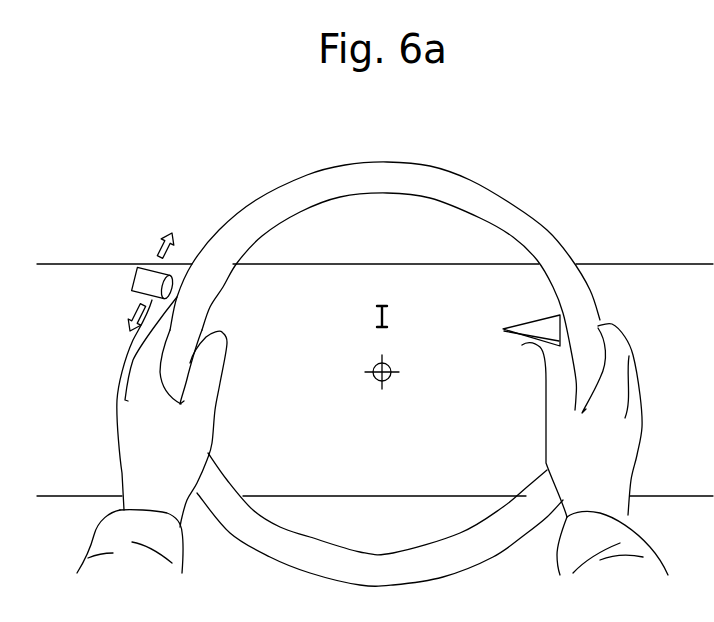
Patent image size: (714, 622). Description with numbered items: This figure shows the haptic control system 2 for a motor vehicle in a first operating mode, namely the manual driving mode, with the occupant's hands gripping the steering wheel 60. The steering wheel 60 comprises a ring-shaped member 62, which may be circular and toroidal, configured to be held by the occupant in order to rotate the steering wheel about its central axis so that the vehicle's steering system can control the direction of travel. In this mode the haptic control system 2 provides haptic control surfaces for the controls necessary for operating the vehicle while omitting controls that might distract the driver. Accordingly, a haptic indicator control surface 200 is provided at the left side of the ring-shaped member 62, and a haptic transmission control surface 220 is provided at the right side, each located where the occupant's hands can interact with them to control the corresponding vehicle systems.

The haptic control system 2 is at (148, 129).
The steering wheel 60 is at (254, 165).
The ring-shaped member 62 is at (516, 204).
The haptic indicator control surface 200 is at (143, 283).
The haptic transmission control surface 220 is at (545, 320).